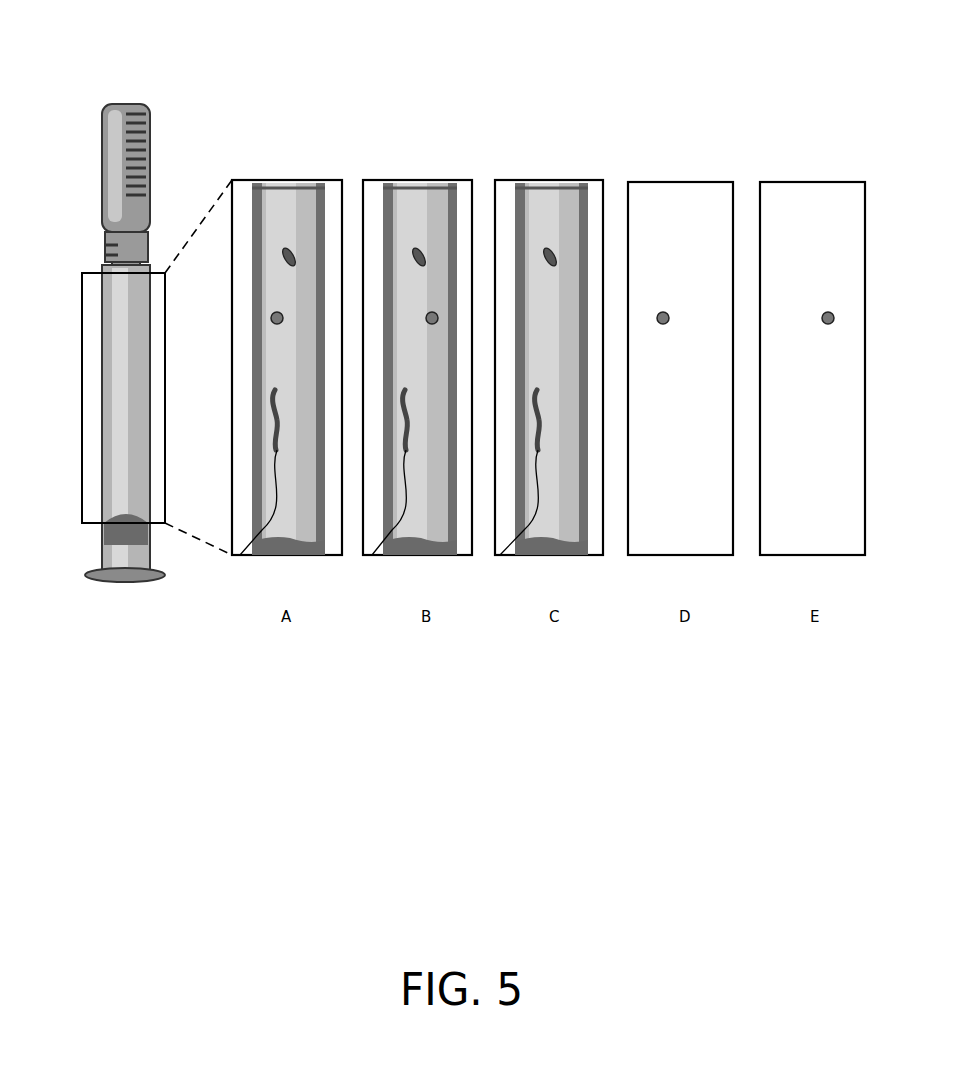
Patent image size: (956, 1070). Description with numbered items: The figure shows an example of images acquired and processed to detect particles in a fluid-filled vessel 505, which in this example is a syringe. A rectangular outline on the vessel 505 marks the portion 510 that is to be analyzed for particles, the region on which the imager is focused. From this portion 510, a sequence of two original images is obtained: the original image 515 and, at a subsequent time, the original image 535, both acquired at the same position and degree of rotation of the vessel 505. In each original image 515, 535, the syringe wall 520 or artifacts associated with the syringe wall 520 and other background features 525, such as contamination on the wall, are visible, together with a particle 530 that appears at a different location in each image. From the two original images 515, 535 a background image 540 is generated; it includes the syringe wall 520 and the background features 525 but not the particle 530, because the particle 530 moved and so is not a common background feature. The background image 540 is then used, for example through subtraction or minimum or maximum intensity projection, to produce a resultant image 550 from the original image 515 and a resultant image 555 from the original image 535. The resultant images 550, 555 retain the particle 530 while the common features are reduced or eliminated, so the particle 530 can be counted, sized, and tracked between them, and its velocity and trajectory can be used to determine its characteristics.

The fluid-filled vessel 505 is at (95, 92).
The portion of the vessel 510 is at (118, 380).
The original image 515 is at (285, 180).
The syringe wall 520 is at (250, 355).
The background features 525 is at (288, 246).
The particle 530 is at (270, 318).
The original image 535 is at (405, 180).
The background image 540 is at (540, 180).
The resultant image 550 is at (668, 180).
The resultant image 555 is at (808, 180).